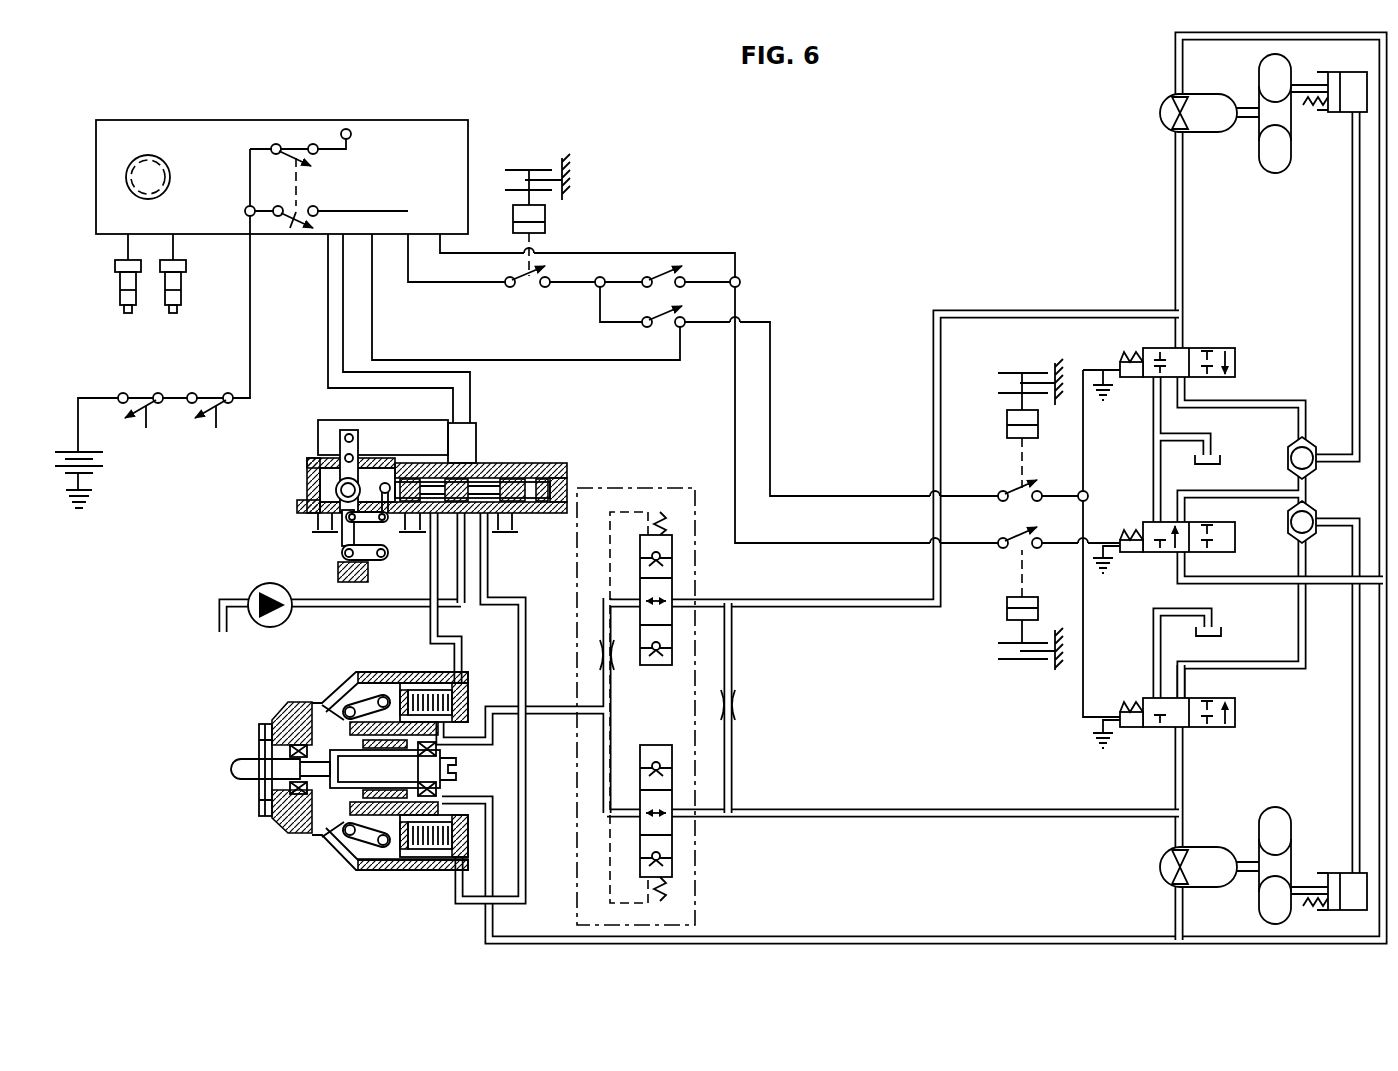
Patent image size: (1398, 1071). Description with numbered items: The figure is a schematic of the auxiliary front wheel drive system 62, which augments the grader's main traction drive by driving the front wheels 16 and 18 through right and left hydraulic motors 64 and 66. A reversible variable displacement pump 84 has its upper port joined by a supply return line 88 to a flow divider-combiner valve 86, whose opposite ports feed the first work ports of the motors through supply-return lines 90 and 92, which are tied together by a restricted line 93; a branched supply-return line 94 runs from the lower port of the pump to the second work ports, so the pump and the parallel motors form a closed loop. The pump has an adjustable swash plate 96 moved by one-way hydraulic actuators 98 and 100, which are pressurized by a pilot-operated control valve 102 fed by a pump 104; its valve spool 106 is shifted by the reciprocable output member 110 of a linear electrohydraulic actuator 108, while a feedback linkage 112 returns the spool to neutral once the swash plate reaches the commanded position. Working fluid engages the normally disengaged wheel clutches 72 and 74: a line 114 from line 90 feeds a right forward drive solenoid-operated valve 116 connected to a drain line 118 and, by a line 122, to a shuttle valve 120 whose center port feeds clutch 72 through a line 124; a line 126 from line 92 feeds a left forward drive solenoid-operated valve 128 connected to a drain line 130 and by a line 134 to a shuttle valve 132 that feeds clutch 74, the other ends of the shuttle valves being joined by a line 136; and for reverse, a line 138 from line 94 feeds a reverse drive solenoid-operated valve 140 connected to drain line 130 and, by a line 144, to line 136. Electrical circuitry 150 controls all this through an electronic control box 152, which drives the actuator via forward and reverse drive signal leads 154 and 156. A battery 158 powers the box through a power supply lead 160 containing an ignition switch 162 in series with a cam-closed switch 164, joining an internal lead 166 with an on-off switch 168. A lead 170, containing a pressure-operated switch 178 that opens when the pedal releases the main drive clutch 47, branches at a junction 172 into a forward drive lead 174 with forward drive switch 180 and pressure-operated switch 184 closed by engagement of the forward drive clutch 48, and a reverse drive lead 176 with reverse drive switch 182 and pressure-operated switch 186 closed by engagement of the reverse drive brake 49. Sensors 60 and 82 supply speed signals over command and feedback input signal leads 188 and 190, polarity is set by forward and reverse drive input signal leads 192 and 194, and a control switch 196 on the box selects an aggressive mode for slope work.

The wheel 16 is at (1292, 810).
The wheel 18 is at (1275, 173).
The main drive clutch 47 is at (547, 222).
The forward drive clutch 48 is at (1007, 428).
The reverse drive brake 49 is at (1007, 608).
The sensor 60 is at (118, 294).
The auxiliary front wheel drive system 62 is at (1108, 160).
The right hydraulic motor 64 is at (1212, 842).
The left hydraulic motor 66 is at (1200, 132).
The clutch 72 is at (1340, 872).
The clutch 74 is at (1346, 114).
The digital magnetic sensor 82 is at (184, 294).
The reversible variable displacement pump 84 is at (346, 673).
The flow divider-combiner valve 86 is at (606, 488).
The supply return line 88 is at (541, 712).
The supply-return line 90 is at (937, 808).
The supply-return line 92 is at (876, 608).
The restricted line 93 is at (735, 680).
The branched supply-return line 94 is at (855, 938).
The swash plate 96 is at (336, 724).
The one-way hydraulic actuator 98 is at (446, 858).
The one-way hydraulic actuator 100 is at (444, 683).
The pilot-operated control valve 102 is at (516, 518).
The pump 104 is at (257, 587).
The valve spool 106 is at (505, 480).
The linear electrohydraulic actuator 108 is at (425, 415).
The reciprocable output member 110 is at (345, 430).
The feedback linkage 112 is at (372, 520).
The line 114 is at (1175, 762).
The right forward drive solenoid-operated valve 116 is at (1205, 729).
The drain line 118 is at (1154, 641).
The shuttle valve 120 is at (1318, 539).
The line 122 is at (1254, 672).
The line 124 is at (1352, 720).
The line 126 is at (1185, 330).
The left forward drive solenoid-operated valve 128 is at (1237, 357).
The drain line 130 is at (1155, 466).
The shuttle valve 132 is at (1313, 445).
The line 134 is at (1352, 278).
The line 136 is at (1318, 498).
The line 138 is at (1283, 588).
The reverse drive solenoid-operated valve 140 is at (1159, 559).
The line 144 is at (1214, 487).
The electrical circuitry 150 is at (524, 118).
The electronic control box 152 is at (290, 120).
The forward drive signal lead 154 is at (326, 306).
The reverse drive signal lead 156 is at (475, 414).
The battery 158 is at (92, 469).
The power supply lead 160 is at (250, 352).
The ignition switch 162 is at (142, 424).
The switch 164 is at (218, 424).
The lead 166 is at (335, 211).
The on-off switch 168 is at (290, 228).
The lead 170 is at (410, 284).
The junction 172 is at (597, 292).
The forward drive lead 174 is at (855, 496).
The reverse drive lead 176 is at (855, 542).
The pressure-operated switch 178 is at (514, 288).
The forward drive switch 180 is at (672, 313).
The reverse drive switch 182 is at (651, 260).
The pressure-operated switch 184 is at (1004, 492).
The pressure-operated switch 186 is at (1004, 539).
The command input signal lead 188 is at (118, 246).
The feedback input signal lead 190 is at (178, 246).
The forward drive input signal lead 192 is at (431, 358).
The reverse drive input signal lead 194 is at (612, 250).
The control switch 196 is at (168, 172).